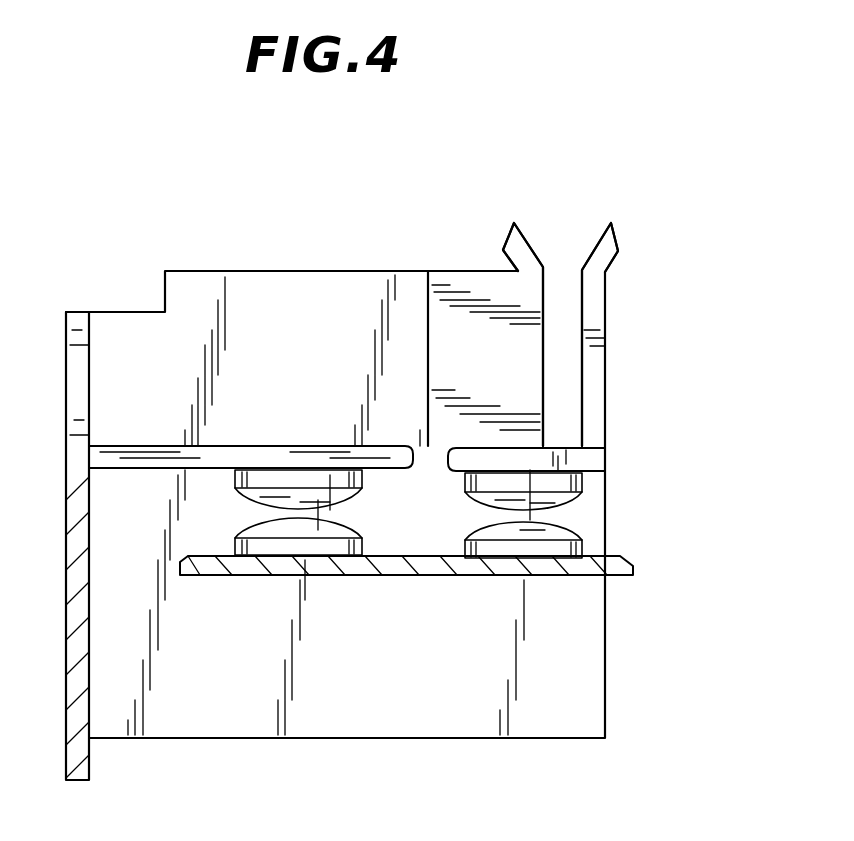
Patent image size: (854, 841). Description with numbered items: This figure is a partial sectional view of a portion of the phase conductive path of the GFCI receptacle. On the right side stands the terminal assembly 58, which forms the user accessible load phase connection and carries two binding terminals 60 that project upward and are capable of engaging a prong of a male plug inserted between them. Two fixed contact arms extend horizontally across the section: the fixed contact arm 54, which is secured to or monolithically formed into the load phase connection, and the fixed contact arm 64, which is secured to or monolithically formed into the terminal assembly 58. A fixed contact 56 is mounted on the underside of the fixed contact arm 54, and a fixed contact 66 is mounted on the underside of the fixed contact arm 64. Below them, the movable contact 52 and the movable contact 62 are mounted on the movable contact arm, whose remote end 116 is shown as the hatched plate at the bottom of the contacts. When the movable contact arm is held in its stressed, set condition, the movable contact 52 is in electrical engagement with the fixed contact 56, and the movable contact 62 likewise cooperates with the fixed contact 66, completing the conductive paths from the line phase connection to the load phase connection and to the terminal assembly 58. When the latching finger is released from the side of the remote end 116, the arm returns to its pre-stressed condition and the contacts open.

The terminal assembly 58 is at (332, 262).
The binding terminals 60 is at (600, 238).
The fixed contact arm 54 is at (162, 446).
The fixed contact arm 64 is at (498, 447).
The fixed contact 56 is at (350, 497).
The movable contact 52 is at (255, 528).
The fixed contact 66 is at (583, 482).
The movable contact 62 is at (557, 537).
The remote end 116 is at (637, 563).